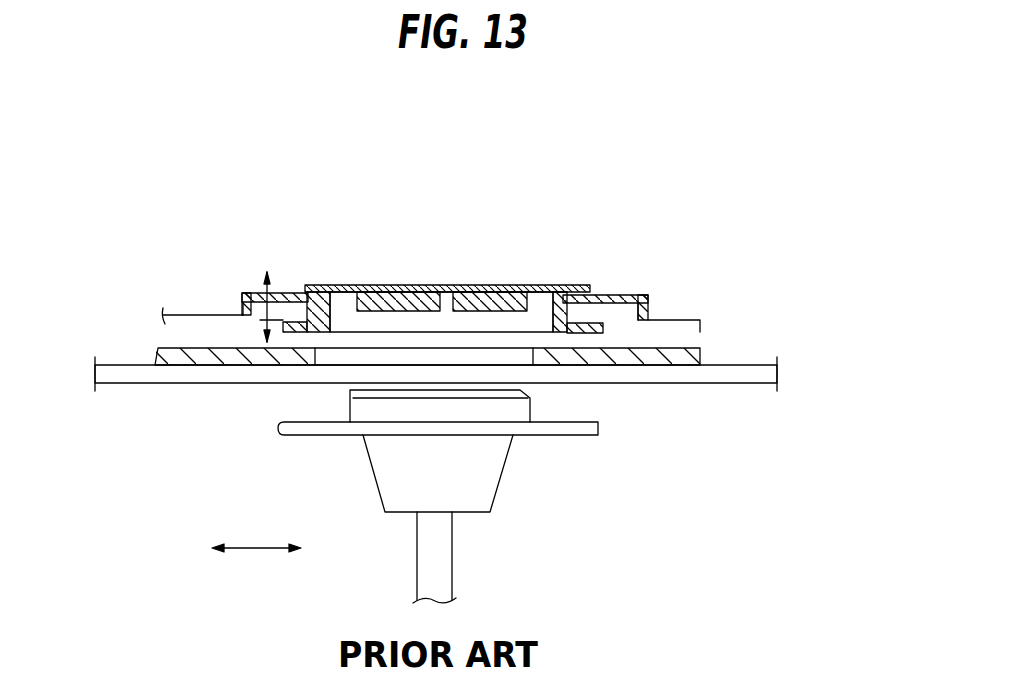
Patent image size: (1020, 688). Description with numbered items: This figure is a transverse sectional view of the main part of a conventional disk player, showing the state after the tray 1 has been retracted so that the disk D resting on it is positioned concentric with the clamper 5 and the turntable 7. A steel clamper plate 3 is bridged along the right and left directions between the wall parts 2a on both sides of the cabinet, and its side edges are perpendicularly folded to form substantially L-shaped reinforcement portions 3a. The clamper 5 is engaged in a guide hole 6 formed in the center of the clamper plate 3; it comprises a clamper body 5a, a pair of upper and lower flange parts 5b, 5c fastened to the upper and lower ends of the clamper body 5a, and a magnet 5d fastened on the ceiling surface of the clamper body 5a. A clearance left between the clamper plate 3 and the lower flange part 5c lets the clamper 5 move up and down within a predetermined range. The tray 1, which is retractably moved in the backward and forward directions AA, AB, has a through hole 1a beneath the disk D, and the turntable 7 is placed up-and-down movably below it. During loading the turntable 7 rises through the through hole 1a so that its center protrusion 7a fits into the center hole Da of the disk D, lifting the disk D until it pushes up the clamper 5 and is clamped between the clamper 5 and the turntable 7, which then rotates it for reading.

The tray 1 is at (672, 385).
The through hole 1a is at (752, 376).
The wall parts 2a is at (697, 320).
The clamper plate 3 is at (632, 295).
The reinforcement portions 3a is at (240, 300).
The clamper 5 is at (443, 286).
The clamper body 5a is at (420, 292).
The upper flange part 5b is at (560, 292).
The lower flange part 5c is at (565, 244).
The magnet 5d is at (370, 290).
The guide hole 6 is at (312, 292).
The turntable 7 is at (279, 428).
The center protrusion 7a is at (528, 410).
The disk D is at (619, 354).
The center hole Da is at (350, 330).
The backward and forward direction AA is at (238, 550).
The backward and forward direction AB is at (319, 550).